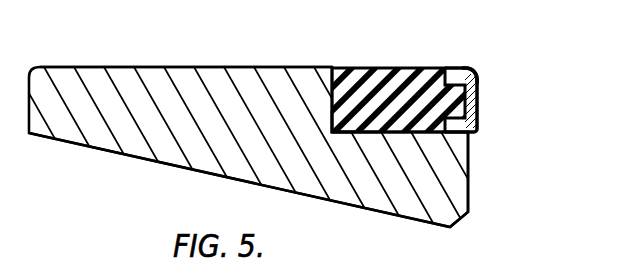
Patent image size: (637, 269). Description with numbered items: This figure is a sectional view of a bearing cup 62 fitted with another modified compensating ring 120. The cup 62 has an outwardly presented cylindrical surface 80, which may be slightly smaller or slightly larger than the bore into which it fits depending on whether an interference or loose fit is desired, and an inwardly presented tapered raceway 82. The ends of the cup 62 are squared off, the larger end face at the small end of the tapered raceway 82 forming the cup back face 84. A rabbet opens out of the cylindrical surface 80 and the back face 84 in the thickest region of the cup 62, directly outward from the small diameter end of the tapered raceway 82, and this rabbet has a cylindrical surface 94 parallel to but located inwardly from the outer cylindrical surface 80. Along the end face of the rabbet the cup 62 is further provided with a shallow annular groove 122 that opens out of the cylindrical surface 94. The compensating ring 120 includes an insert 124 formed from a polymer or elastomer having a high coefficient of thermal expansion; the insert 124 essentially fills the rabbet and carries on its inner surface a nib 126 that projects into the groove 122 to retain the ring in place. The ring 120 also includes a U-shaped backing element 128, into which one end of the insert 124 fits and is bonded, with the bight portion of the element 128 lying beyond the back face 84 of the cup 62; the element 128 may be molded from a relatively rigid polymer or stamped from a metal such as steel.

The cup 62 is at (178, 78).
The cylindrical surface 80 is at (265, 67).
The tapered raceway 82 is at (98, 150).
The cup back face 84 is at (468, 182).
The cylindrical surface 94 is at (417, 133).
The compensating ring 120 is at (486, 68).
The annular groove 122 is at (338, 133).
The insert 124 is at (387, 72).
The nib 126 is at (343, 133).
The backing element 128 is at (485, 104).